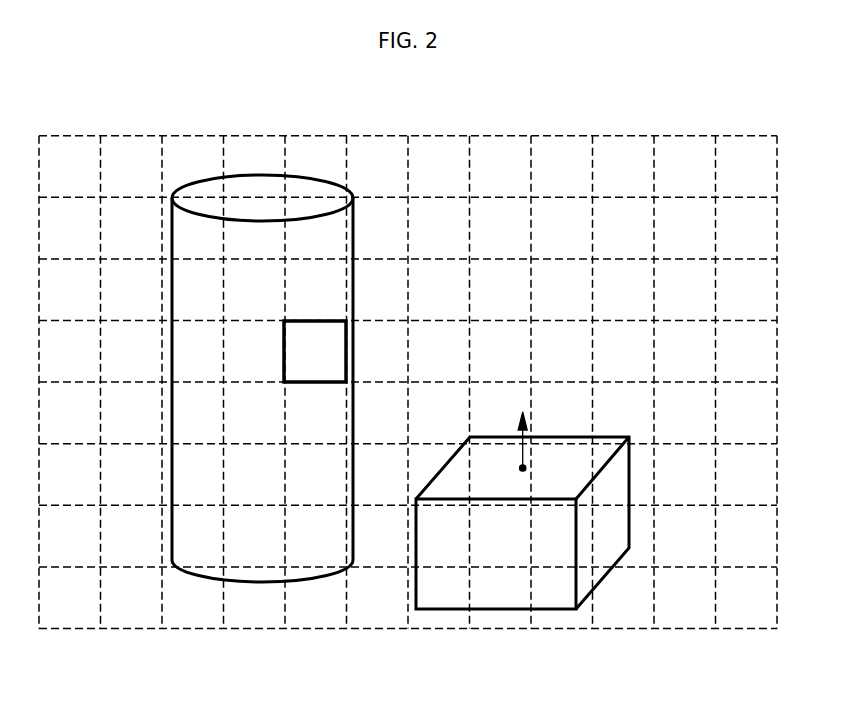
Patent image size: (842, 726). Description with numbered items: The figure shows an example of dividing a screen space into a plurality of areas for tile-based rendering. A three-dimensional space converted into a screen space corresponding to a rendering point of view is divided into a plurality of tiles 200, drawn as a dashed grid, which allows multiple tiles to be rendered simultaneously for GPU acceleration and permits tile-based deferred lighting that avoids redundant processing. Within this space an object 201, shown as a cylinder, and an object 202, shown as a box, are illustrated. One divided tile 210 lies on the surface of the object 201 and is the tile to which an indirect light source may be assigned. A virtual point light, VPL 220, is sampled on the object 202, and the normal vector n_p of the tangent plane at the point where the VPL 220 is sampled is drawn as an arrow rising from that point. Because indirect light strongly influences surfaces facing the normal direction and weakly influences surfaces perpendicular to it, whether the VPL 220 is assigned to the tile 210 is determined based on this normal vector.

The tiles 200 is at (683, 135).
The object 201 is at (252, 175).
The object 202 is at (495, 598).
The divided tile 210 is at (323, 337).
The VPL 220 is at (520, 472).